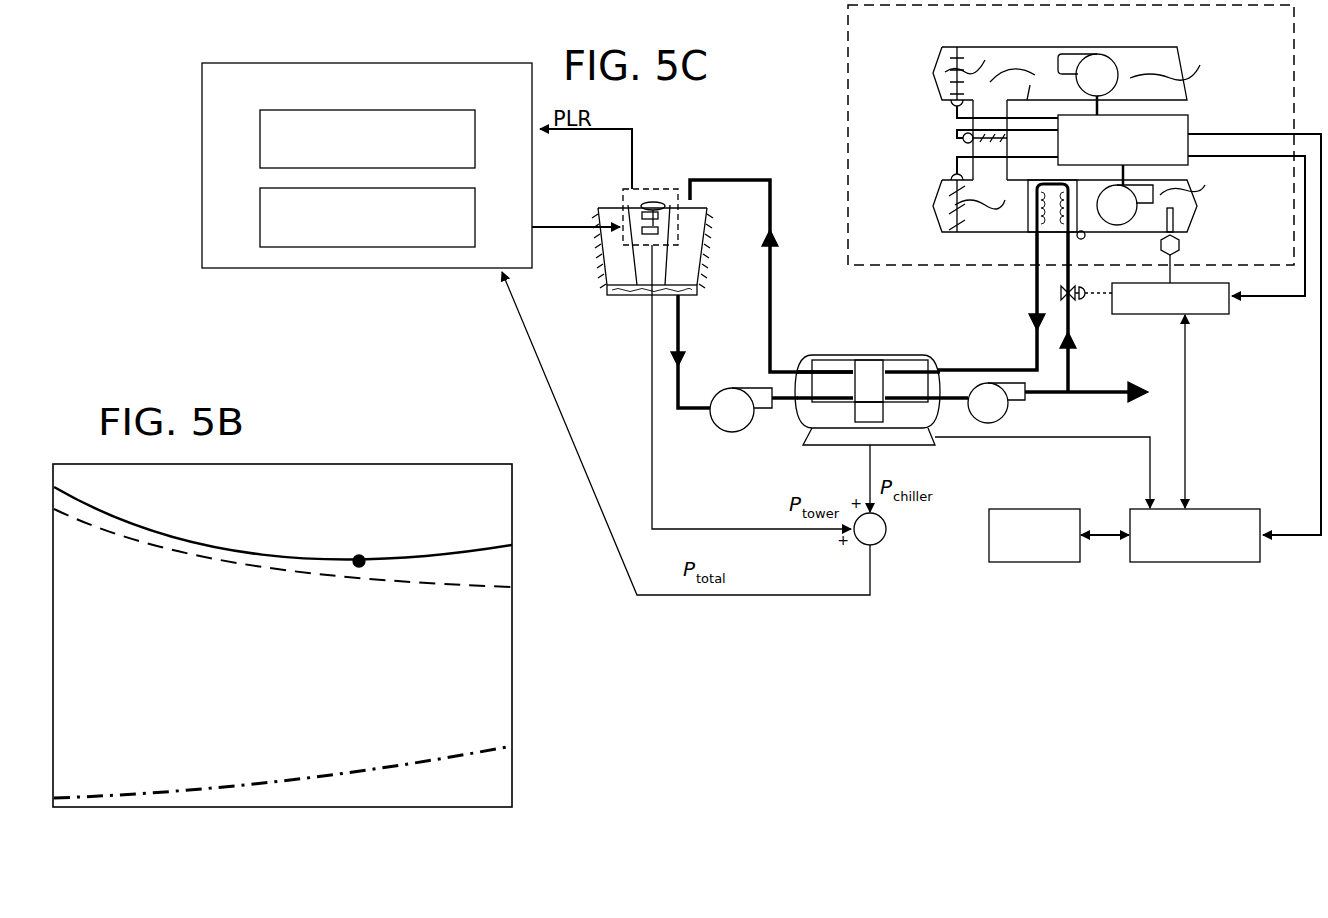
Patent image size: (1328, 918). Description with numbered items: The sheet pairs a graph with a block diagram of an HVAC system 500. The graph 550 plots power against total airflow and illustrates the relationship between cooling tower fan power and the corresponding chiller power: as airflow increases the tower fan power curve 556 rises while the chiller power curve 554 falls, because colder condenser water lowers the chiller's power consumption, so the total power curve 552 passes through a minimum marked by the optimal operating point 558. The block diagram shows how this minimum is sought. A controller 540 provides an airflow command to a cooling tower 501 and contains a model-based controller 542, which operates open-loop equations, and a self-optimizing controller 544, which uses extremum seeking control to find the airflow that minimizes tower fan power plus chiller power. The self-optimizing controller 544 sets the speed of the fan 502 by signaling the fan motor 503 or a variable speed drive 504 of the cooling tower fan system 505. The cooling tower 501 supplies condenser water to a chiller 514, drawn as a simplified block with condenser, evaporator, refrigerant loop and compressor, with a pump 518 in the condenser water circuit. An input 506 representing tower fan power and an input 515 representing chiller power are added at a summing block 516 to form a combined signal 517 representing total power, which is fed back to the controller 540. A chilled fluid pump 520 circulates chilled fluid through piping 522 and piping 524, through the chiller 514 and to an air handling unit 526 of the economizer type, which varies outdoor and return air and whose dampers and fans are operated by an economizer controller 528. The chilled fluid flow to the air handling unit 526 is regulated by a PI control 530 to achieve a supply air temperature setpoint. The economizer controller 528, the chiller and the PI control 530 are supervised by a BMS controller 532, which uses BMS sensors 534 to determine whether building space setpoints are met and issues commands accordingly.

In FIG. 5C, the HVAC system 500 is at (803, 664).
In FIG. 5C, the cooling tower 501 is at (611, 314).
In FIG. 5C, the fan 502 is at (653, 202).
In FIG. 5C, the fan motor 503 is at (642, 215).
In FIG. 5C, the variable speed drive 504 is at (660, 230).
In FIG. 5C, the cooling tower fan system 505 is at (678, 189).
In FIG. 5C, the input 506 is at (652, 512).
In FIG. 5C, the chiller 514 is at (800, 412).
In FIG. 5C, the input 515 is at (870, 465).
In FIG. 5C, the summing block 516 is at (887, 527).
In FIG. 5C, the combined signal 517 is at (780, 595).
In FIG. 5C, the pump 518 is at (732, 432).
In FIG. 5C, the chilled fluid pump 520 is at (1017, 400).
In FIG. 5C, the piping 522 is at (1072, 312).
In FIG. 5C, the piping 524 is at (1035, 287).
In FIG. 5C, the air handling unit 526 is at (846, 46).
In FIG. 5C, the economizer controller 528 is at (1192, 117).
In FIG. 5C, the PI control 530 is at (1212, 313).
In FIG. 5C, the BMS controller 532 is at (1238, 517).
In FIG. 5C, the BMS sensors 534 is at (997, 517).
In FIG. 5C, the controller 540 is at (223, 90).
In FIG. 5C, the model-based controller 542 is at (283, 147).
In FIG. 5C, the self-optimizing controller 544 is at (283, 228).
In FIG. 5B, the power versus total airflow graph 550 is at (540, 720).
In FIG. 5B, the total power curve 552 is at (323, 560).
In FIG. 5B, the chiller power curve 554 is at (382, 582).
In FIG. 5B, the cooling tower power curve 556 is at (270, 782).
In FIG. 5B, the optimal operating point 558 is at (365, 557).